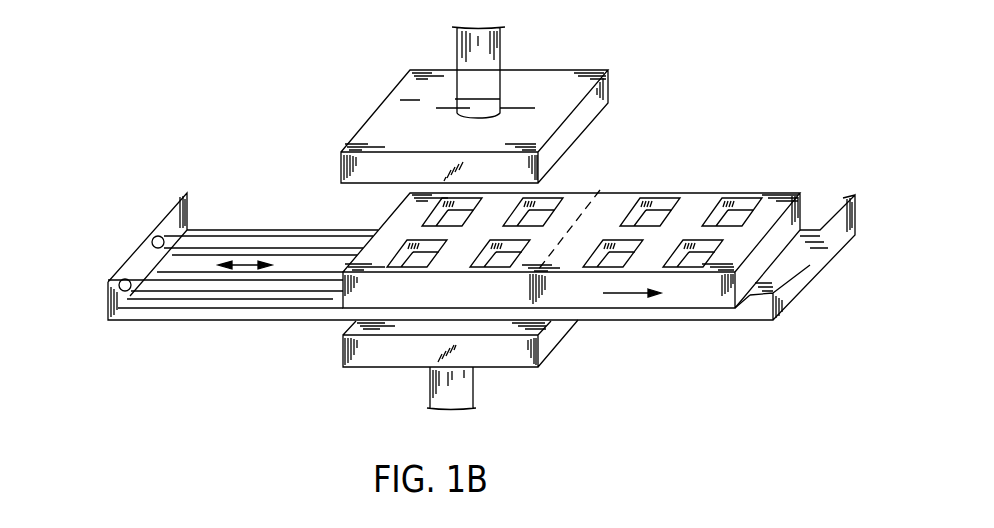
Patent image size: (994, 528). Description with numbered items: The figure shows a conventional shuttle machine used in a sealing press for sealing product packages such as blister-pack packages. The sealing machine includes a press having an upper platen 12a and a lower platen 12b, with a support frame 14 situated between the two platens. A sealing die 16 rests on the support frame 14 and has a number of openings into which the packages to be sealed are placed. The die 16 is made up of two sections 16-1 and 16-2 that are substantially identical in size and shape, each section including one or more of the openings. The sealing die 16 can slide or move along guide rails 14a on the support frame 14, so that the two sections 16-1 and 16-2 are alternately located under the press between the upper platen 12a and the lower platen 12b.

The upper platen 12a is at (577, 117).
The lower platen 12b is at (552, 346).
The support frame 14 is at (248, 258).
The guide rails 14a is at (167, 286).
The sealing die 16 is at (768, 262).
The first section 16-1 is at (368, 287).
The second section 16-2 is at (720, 296).